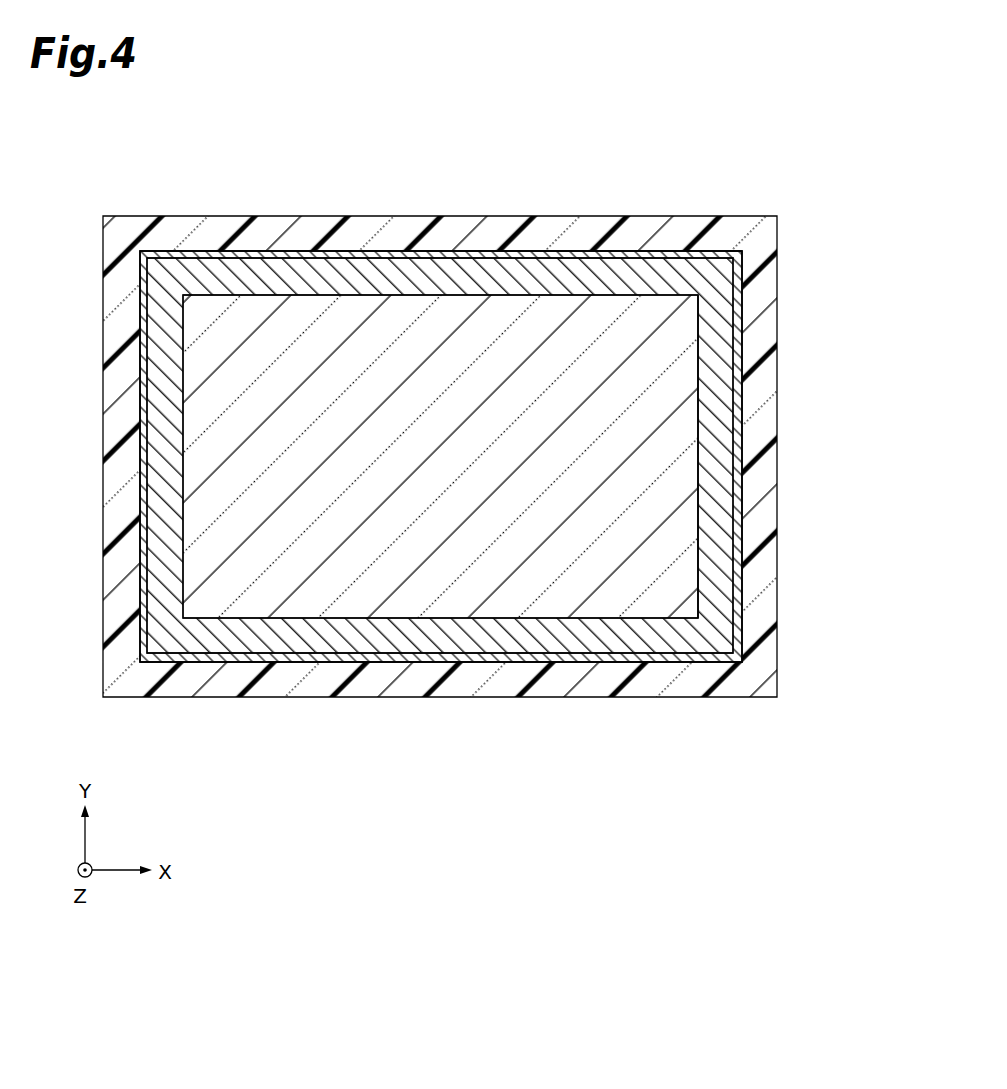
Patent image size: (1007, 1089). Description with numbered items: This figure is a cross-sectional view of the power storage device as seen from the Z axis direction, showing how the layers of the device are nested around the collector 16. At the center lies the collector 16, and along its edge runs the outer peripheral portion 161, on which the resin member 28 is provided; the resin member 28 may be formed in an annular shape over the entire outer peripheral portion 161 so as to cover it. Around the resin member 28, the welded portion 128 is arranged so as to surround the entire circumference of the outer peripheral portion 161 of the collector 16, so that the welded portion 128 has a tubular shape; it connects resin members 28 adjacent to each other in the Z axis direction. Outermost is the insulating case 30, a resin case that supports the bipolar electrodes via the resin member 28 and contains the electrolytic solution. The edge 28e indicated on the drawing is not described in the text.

The collector 16 is at (653, 447).
The outer peripheral portion 161 is at (690, 517).
The resin member 28 is at (717, 343).
The outer edge of adhesive layer 28e is at (732, 395).
The insulating case 30 is at (762, 297).
The welded portion 128 is at (666, 256).